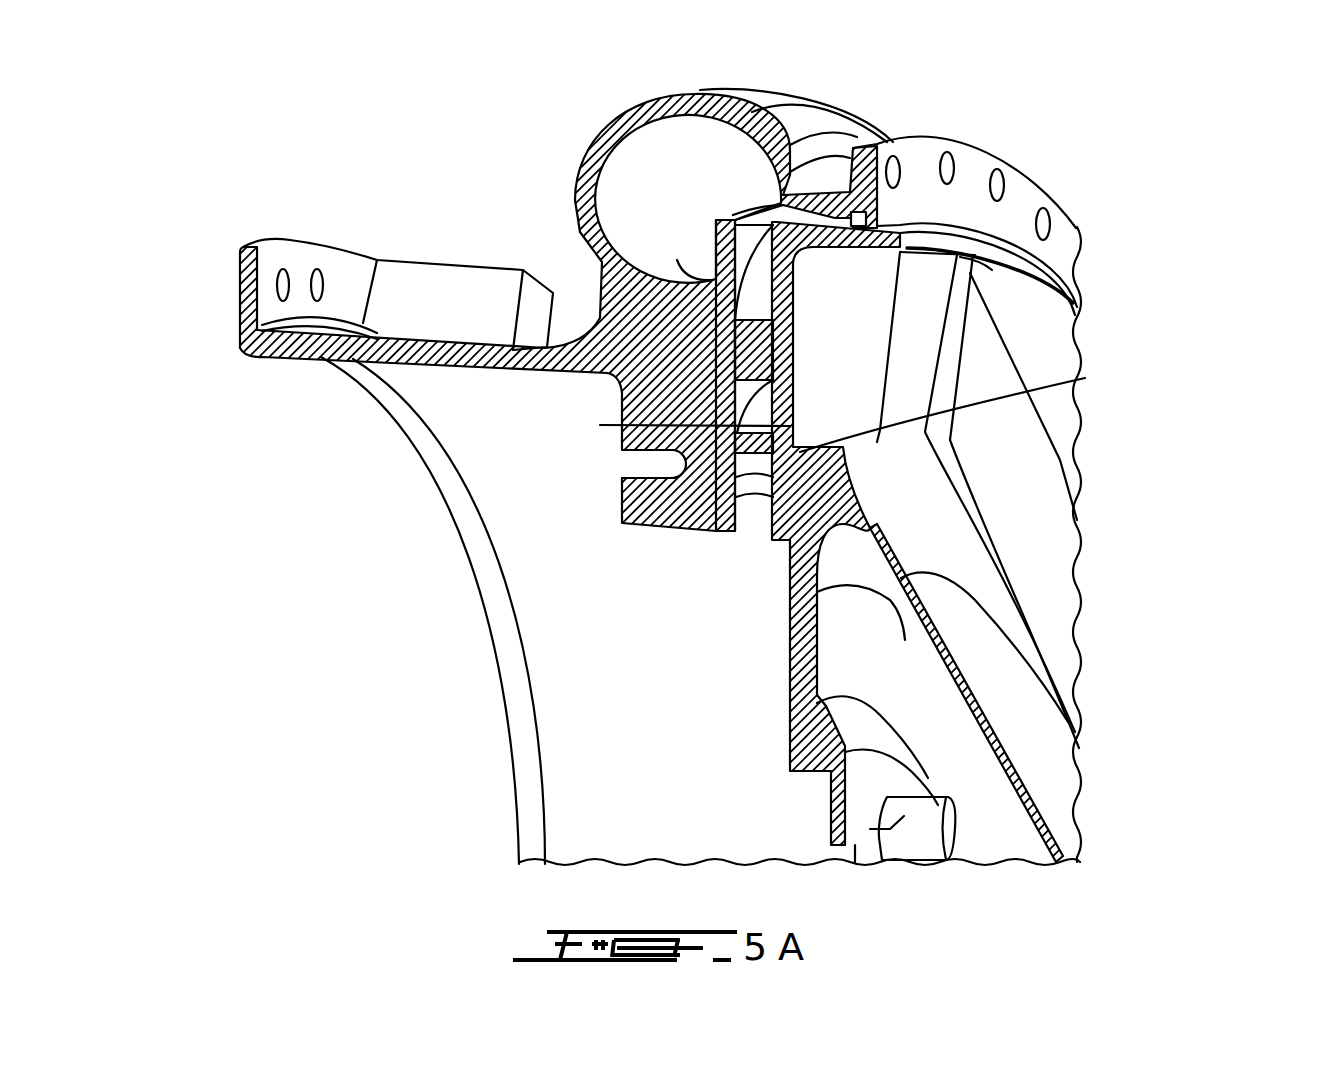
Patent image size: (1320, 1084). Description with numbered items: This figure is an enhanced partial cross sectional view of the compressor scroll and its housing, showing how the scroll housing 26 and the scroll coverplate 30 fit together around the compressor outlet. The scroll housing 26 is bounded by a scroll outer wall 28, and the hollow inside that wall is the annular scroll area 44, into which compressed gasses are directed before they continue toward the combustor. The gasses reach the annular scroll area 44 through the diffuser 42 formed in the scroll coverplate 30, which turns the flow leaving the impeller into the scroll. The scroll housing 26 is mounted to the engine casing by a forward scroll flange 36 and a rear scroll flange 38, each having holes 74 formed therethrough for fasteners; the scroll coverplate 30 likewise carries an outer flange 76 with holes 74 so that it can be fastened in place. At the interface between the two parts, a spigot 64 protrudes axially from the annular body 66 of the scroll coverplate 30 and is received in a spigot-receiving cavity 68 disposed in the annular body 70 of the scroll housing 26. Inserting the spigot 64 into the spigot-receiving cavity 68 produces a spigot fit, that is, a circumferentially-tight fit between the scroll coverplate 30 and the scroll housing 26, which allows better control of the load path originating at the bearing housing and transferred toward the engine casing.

The scroll housing 26 is at (425, 661).
The scroll outer wall 28 is at (600, 123).
The scroll coverplate 30 is at (1112, 778).
The forward scroll flange 36 is at (240, 342).
The rear scroll flange 38 is at (836, 170).
The diffuser 42 is at (755, 528).
The annular scroll area 44 is at (625, 201).
The spigot 64 is at (790, 427).
The annular body 66 is at (815, 497).
The spigot-receiving cavity 68 is at (700, 425).
The annular body 70 is at (645, 510).
The holes 74 is at (1050, 226).
The outer flange 76 is at (1020, 197).